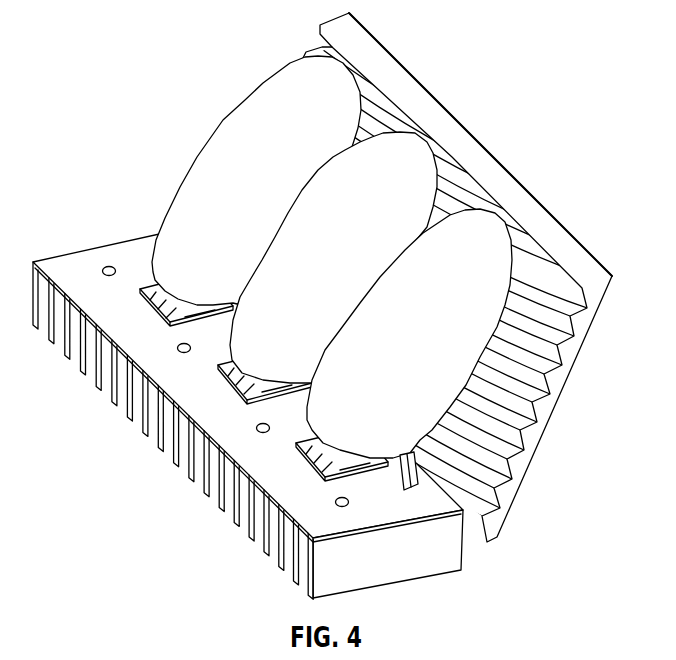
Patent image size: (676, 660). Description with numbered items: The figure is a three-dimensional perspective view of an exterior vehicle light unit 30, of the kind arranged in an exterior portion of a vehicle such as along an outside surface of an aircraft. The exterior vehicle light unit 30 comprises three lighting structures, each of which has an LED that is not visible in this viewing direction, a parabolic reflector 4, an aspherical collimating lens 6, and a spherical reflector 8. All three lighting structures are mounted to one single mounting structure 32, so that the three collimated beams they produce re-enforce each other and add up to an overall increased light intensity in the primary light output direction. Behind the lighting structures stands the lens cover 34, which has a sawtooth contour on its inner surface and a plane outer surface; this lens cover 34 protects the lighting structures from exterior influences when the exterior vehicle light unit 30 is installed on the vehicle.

The parabolic reflector 4 is at (265, 92).
The aspherical collimating lens 6 is at (395, 482).
The spherical reflector 8 is at (156, 288).
The exterior vehicle light unit 30 is at (78, 413).
The mounting structure 32 is at (427, 582).
The lens cover 34 is at (588, 247).